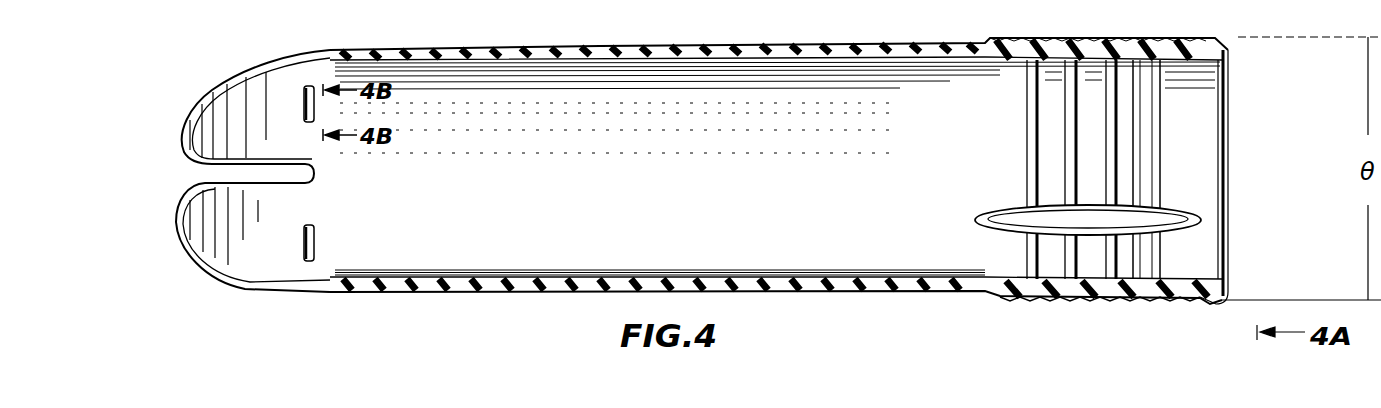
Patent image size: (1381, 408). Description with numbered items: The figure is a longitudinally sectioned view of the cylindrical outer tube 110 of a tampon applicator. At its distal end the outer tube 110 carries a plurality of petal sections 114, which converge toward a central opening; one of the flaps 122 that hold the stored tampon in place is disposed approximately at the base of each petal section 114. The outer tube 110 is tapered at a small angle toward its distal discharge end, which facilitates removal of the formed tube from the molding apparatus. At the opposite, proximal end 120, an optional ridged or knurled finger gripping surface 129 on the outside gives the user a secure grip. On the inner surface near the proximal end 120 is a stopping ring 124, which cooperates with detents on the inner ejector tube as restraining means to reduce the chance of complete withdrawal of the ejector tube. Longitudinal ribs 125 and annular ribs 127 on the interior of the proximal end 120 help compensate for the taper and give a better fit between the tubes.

The outer tube 110 is at (817, 293).
The petal section 114 is at (203, 259).
The proximal end 120 is at (1109, 201).
The flap 122 is at (303, 102).
The stopping ring 124 is at (1153, 128).
The longitudinal ribs 125 is at (1200, 222).
The annular ribs 127 is at (1030, 178).
The finger gripping surface 129 is at (1090, 305).